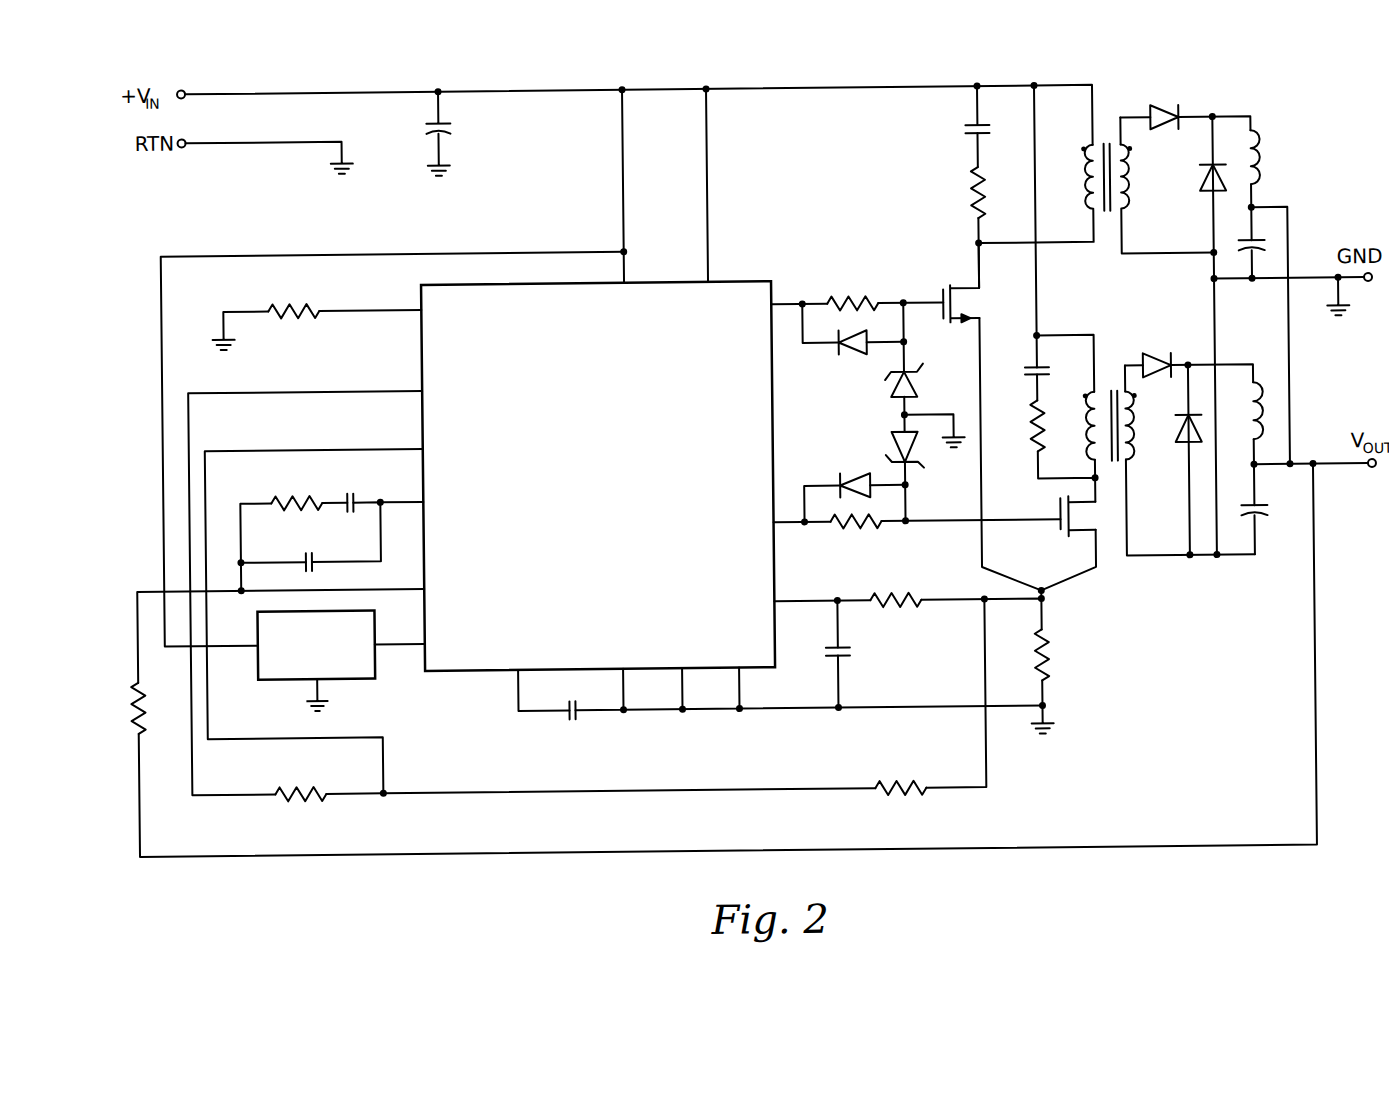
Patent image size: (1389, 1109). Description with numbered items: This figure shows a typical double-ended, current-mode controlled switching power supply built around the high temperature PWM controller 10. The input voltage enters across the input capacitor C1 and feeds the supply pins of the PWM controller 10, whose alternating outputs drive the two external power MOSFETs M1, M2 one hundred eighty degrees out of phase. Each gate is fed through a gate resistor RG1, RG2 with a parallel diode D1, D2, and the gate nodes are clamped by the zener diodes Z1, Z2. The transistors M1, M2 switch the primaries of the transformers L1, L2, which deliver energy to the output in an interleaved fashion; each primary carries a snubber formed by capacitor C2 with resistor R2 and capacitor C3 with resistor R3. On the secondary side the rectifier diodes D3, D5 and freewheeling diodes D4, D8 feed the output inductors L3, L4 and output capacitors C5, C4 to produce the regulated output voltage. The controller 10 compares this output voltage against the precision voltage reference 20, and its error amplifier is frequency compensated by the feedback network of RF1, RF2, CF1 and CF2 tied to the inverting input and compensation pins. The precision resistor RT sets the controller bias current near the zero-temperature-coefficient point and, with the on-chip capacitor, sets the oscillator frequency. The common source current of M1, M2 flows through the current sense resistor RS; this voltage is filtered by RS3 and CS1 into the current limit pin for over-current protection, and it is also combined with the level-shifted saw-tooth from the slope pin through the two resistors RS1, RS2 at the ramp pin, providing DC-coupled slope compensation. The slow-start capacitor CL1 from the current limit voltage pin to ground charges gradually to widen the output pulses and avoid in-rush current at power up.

The PWM controller 10 is at (586, 535).
The voltage reference 20 is at (351, 675).
The input capacitor C1 is at (424, 134).
The snubber capacitor C2 is at (964, 130).
The snubber capacitor C3 is at (1023, 372).
The output capacitor C4 is at (1273, 510).
The output capacitor C5 is at (1243, 233).
The snubber resistor R2 is at (964, 192).
The snubber resistor R3 is at (1023, 425).
The precision resistor RT is at (293, 296).
The feedback network resistor RF1 is at (296, 489).
The feedback network resistor RF2 is at (119, 709).
The feedback network capacitor CF1 is at (353, 489).
The feedback network capacitor CF2 is at (307, 547).
The slope compensation resistor RS1 is at (900, 803).
The slope compensation resistor RS2 is at (300, 811).
The filter resistor RS3 is at (895, 589).
The current sense resistor RS is at (1058, 654).
The filter capacitor CS1 is at (862, 658).
The slow start capacitor CL1 is at (577, 727).
The gate resistor RG1 is at (856, 535).
The gate resistor RG2 is at (852, 291).
The gate diode D1 is at (855, 471).
The gate diode D2 is at (852, 360).
The rectifier diode D3 is at (1165, 102).
The freewheeling diode D4 is at (1199, 179).
The rectifier diode D5 is at (1158, 351).
The freewheeling diode D8 is at (1177, 430).
The zener diode Z1 is at (916, 464).
The zener diode Z2 is at (918, 380).
The power MOSFET M1 is at (1084, 516).
The power MOSFET M2 is at (970, 283).
The transformer L1 is at (1109, 411).
The transformer L2 is at (1107, 161).
The output inductor L3 is at (1270, 157).
The output inductor L4 is at (1246, 410).